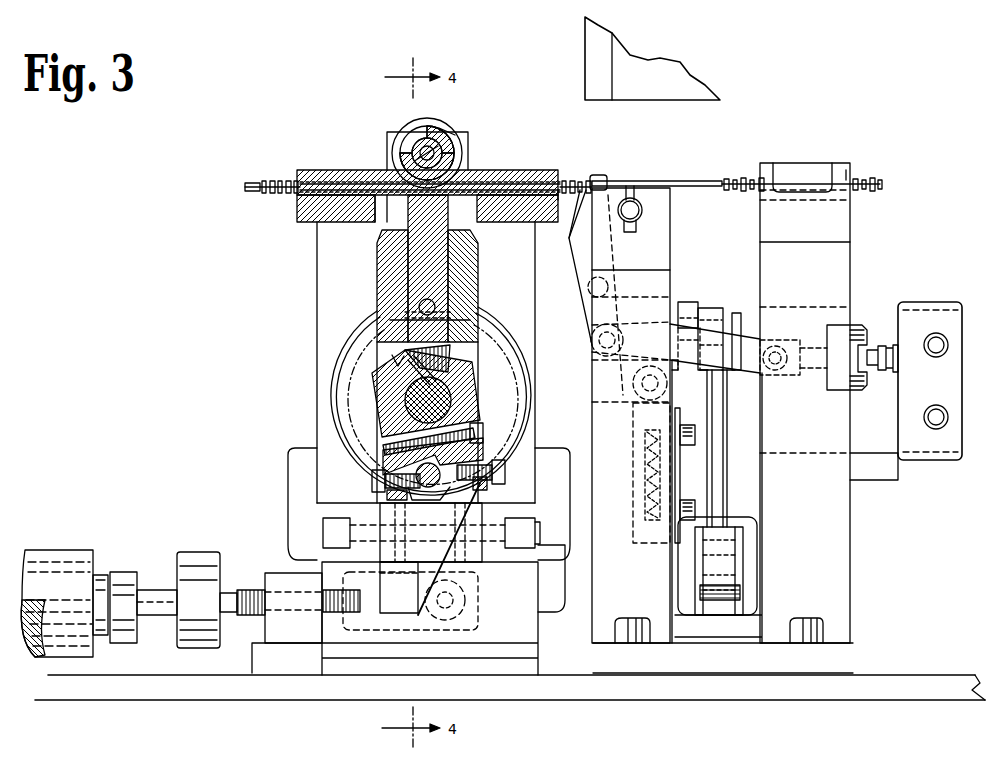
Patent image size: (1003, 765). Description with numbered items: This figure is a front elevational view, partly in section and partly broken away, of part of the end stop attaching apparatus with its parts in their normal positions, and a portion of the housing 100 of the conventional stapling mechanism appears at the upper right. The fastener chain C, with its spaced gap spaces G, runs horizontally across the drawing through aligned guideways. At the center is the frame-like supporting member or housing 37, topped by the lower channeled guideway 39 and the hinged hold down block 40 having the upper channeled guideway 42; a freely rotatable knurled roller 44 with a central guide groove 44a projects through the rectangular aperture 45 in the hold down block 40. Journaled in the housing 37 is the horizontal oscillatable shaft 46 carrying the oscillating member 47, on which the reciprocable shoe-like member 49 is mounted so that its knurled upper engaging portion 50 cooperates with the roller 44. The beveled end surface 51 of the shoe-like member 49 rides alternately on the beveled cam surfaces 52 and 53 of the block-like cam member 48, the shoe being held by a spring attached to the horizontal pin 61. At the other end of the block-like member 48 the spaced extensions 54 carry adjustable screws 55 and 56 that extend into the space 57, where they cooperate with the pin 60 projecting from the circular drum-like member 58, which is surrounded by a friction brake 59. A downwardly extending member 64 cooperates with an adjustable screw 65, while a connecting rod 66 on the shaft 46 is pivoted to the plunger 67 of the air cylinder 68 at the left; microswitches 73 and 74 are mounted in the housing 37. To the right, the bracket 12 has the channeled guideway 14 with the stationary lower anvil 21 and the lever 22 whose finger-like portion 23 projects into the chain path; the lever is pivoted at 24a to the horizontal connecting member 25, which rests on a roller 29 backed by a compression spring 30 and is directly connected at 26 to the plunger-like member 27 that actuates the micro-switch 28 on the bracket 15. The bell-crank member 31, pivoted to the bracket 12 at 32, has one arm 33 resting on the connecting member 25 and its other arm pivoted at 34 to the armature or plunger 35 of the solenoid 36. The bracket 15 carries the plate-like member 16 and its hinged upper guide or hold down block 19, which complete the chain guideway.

The housing 100 is at (700, 80).
The fastener chain C is at (262, 196).
The channeled guideway 14 is at (668, 181).
The gap space G is at (716, 168).
The upper channeled guideway 42 is at (302, 172).
The hold down block 40 is at (522, 172).
The knurled upper engaging portion 50 is at (380, 173).
The rectangular aperture 45 is at (470, 162).
The lower channeled guideway 39 is at (560, 194).
The knurled roller 44 is at (430, 125).
The central guide groove 44a is at (448, 130).
The supporting member or housing 37 is at (536, 312).
The oscillating member 47 is at (478, 276).
The shoe-like member 49 is at (455, 262).
The horizontal pin 61 is at (420, 306).
The beveled end surface 51 is at (470, 320).
The friction brake 59 is at (333, 402).
The circular drum-like member 58 is at (354, 392).
The oscillatable shaft 46 is at (478, 383).
The block-like cam member 48 is at (483, 408).
The beveled cam surface 52 is at (500, 358).
The beveled cam surface 53 is at (392, 358).
The extensions 54 is at (498, 446).
The adjustable screw 56 is at (385, 482).
The space 57 is at (430, 487).
The pin 60 is at (460, 480).
The adjustable screw 55 is at (505, 470).
The microswitch 73 is at (560, 583).
The microswitch 74 is at (298, 566).
The connecting rod 66 is at (482, 592).
The downwardly extending member 64 is at (398, 607).
The adjustable screw 65 is at (345, 612).
The air cylinder 68 is at (66, 566).
The plunger 67 is at (160, 600).
The lever 22 is at (578, 250).
The bracket or supporting member 12 is at (595, 522).
The finger-like portion 23 is at (600, 176).
The lower anvil 21 is at (633, 198).
The pivot 24a is at (610, 357).
The roller 29 is at (634, 388).
The compression spring 30 is at (634, 470).
The arm 33 is at (690, 302).
The connecting member 25 is at (706, 334).
The pivot 32 is at (738, 320).
The bell-crank member 31 is at (720, 448).
The solenoid 36 is at (758, 552).
The armature or plunger 35 is at (731, 516).
The pivot 34 is at (742, 572).
The bracket or supporting member 15 is at (852, 526).
The upper guide or hold down block 19 is at (846, 170).
The plate-like member 16 is at (852, 200).
The connection 26 is at (777, 370).
The plunger-like member 27 is at (876, 370).
The micro-switch 28 is at (956, 370).